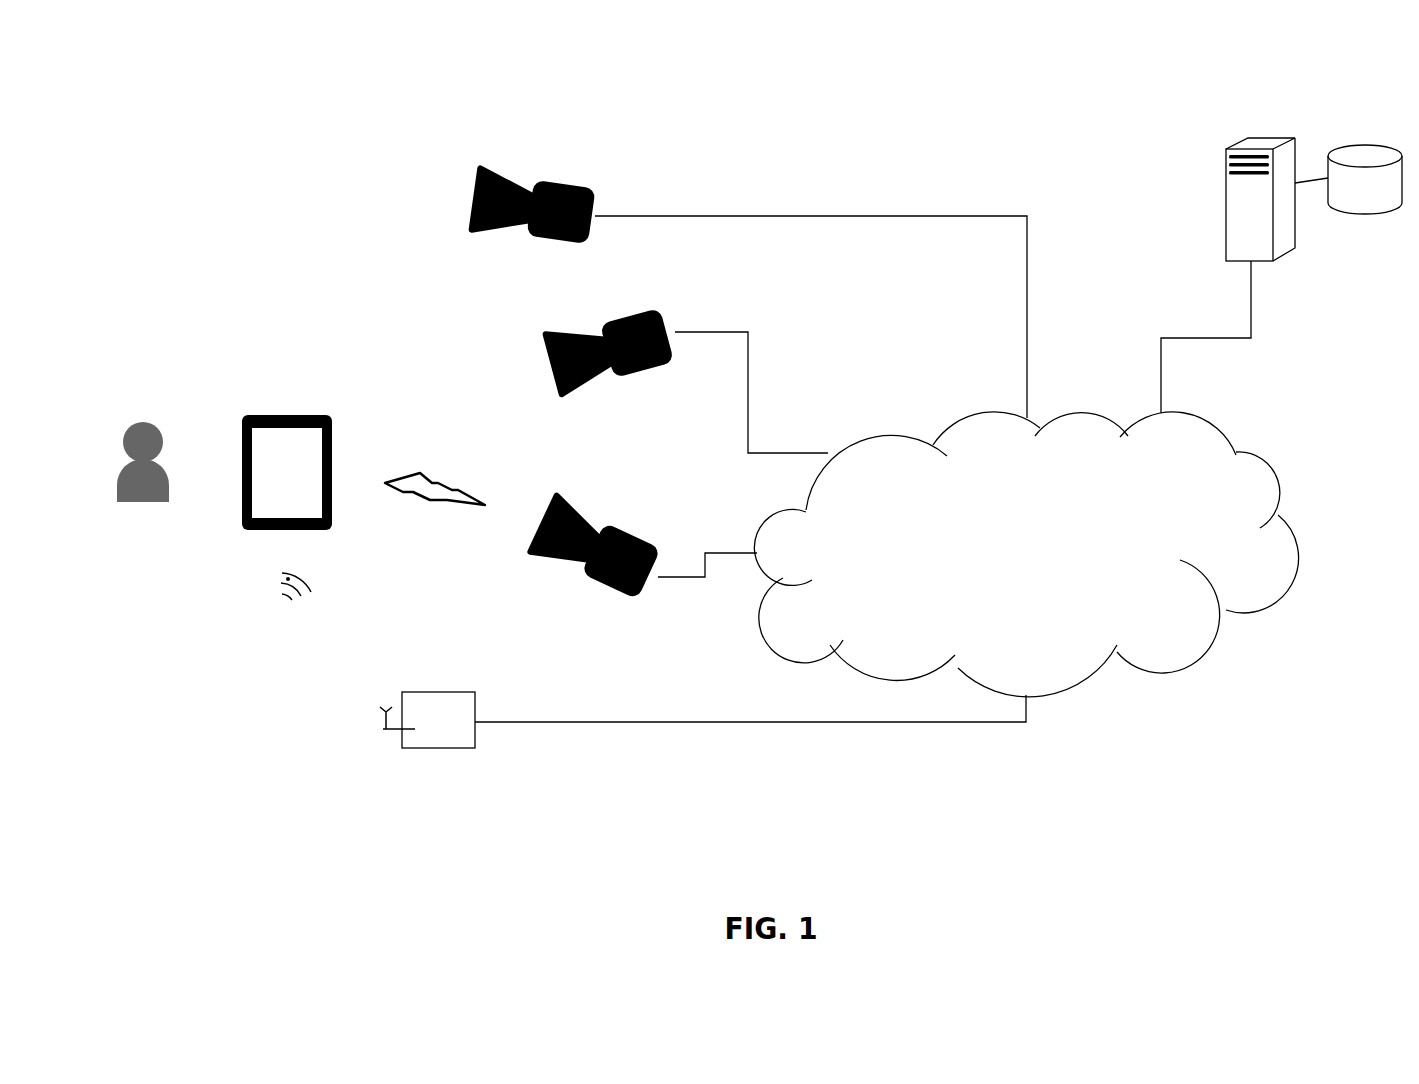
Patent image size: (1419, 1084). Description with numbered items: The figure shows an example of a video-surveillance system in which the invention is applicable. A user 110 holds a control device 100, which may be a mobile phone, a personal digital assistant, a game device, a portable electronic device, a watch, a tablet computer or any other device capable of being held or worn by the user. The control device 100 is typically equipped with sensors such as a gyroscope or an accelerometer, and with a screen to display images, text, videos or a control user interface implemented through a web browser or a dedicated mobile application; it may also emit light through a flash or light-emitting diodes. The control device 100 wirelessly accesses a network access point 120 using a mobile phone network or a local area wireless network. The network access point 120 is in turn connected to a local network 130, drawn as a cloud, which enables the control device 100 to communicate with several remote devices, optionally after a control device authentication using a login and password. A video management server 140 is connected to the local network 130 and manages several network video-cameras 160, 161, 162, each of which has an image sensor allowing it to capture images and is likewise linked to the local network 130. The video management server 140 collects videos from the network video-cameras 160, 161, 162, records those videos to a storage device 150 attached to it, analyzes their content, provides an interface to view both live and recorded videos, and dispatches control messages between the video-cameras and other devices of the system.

The control device 100 is at (278, 413).
The user 110 is at (138, 410).
The network access point 120 is at (480, 750).
The local network 130 is at (1163, 665).
The video management server 140 is at (1260, 135).
The storage device 150 is at (1367, 143).
The network video-camera 160 is at (562, 177).
The network video-camera 161 is at (645, 307).
The network video-camera 162 is at (640, 528).